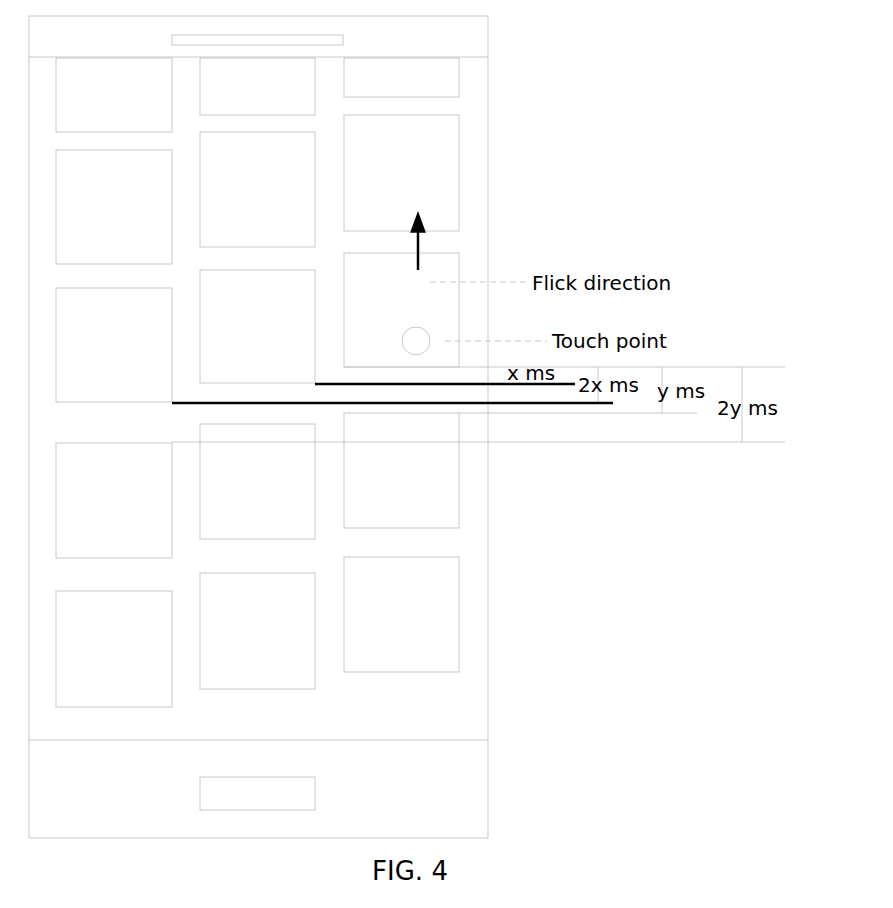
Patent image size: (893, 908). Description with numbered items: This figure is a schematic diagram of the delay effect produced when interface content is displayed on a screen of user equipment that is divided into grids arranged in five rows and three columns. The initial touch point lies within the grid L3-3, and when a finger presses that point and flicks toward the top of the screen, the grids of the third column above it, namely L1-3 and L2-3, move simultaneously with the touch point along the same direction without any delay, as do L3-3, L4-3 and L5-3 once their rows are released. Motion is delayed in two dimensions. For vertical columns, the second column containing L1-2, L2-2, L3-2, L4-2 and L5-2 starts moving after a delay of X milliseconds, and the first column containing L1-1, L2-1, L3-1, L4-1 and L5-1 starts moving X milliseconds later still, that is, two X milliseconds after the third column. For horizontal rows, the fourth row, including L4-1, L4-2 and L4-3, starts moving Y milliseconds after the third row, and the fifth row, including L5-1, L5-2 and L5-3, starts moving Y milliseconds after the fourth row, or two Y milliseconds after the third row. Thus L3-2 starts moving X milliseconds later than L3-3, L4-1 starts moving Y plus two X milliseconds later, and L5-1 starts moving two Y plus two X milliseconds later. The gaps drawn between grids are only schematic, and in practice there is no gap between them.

The grid L1-1 is at (114, 95).
The grid L2-1 is at (114, 207).
The grid L3-1 is at (114, 345).
The grid L4-1 is at (114, 500).
The grid L5-1 is at (114, 649).
The grid L1-2 is at (257, 86).
The grid L2-2 is at (257, 189).
The grid L3-2 is at (257, 326).
The grid L4-2 is at (257, 481).
The grid L5-2 is at (257, 631).
The grid L1-3 is at (401, 77).
The grid L2-3 is at (401, 173).
The grid L3-3 is at (401, 310).
The grid L4-3 is at (401, 470).
The grid L5-3 is at (401, 614).